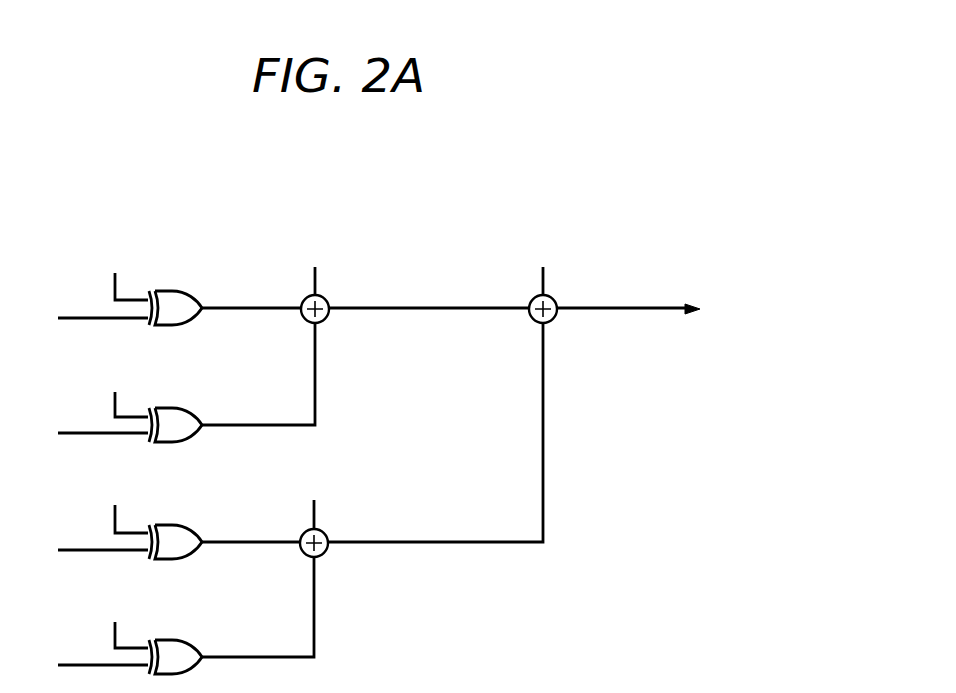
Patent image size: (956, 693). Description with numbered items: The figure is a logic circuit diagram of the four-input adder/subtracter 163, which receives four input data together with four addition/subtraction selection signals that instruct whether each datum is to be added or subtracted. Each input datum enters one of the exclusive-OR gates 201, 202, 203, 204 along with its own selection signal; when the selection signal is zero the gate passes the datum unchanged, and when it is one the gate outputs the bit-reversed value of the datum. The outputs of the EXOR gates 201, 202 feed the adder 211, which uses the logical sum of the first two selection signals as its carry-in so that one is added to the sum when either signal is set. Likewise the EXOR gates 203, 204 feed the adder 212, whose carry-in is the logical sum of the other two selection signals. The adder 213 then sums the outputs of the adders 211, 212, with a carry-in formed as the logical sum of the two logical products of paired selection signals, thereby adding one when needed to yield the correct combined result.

The four-input adder/subtracter 163 is at (382, 198).
The exclusive-OR gate 201 is at (175, 292).
The exclusive-OR gate 202 is at (175, 409).
The exclusive-OR gate 203 is at (175, 526).
The exclusive-OR gate 204 is at (175, 641).
The adder 211 is at (326, 319).
The adder 212 is at (325, 553).
The adder 213 is at (554, 319).